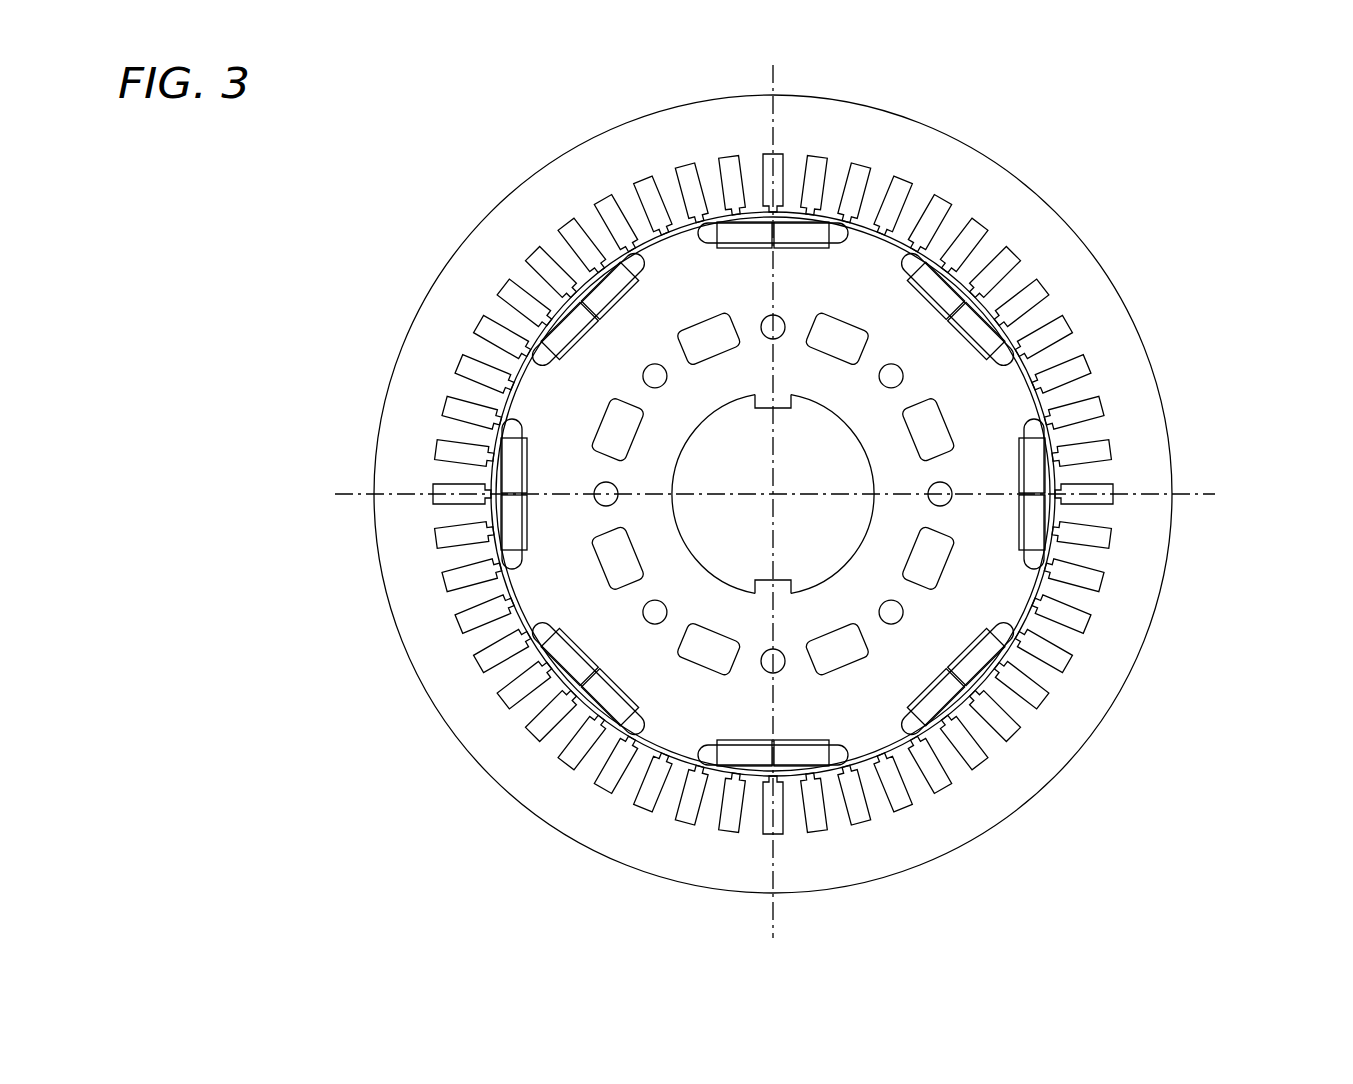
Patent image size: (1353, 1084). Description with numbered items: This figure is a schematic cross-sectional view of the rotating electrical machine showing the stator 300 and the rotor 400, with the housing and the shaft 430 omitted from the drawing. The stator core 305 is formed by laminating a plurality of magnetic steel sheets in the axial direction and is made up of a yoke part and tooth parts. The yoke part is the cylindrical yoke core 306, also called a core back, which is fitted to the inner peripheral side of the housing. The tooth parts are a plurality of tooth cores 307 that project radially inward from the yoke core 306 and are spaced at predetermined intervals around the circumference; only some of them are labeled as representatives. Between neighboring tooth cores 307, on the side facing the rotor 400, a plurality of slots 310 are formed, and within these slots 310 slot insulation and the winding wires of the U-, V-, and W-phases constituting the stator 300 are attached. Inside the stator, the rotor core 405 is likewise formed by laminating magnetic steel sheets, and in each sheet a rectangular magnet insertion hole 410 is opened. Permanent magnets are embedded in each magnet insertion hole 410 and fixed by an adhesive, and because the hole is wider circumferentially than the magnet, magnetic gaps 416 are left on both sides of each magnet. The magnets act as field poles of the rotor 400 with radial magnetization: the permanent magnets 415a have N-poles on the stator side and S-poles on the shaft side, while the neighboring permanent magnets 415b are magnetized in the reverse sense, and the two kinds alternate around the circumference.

The stator 300 is at (747, 474).
The stator core 305 is at (583, 142).
The yoke core 306 is at (824, 455).
The tooth cores 307 is at (993, 243).
The slots 310 is at (1072, 322).
The rotor 400 is at (747, 535).
The rotor core 405 is at (883, 737).
The magnet insertion hole 410 is at (747, 470).
The permanent magnets 415a is at (613, 288).
The permanent magnets 415b is at (513, 470).
The magnetic gaps 416 is at (1033, 470).
The shaft 430 is at (785, 580).